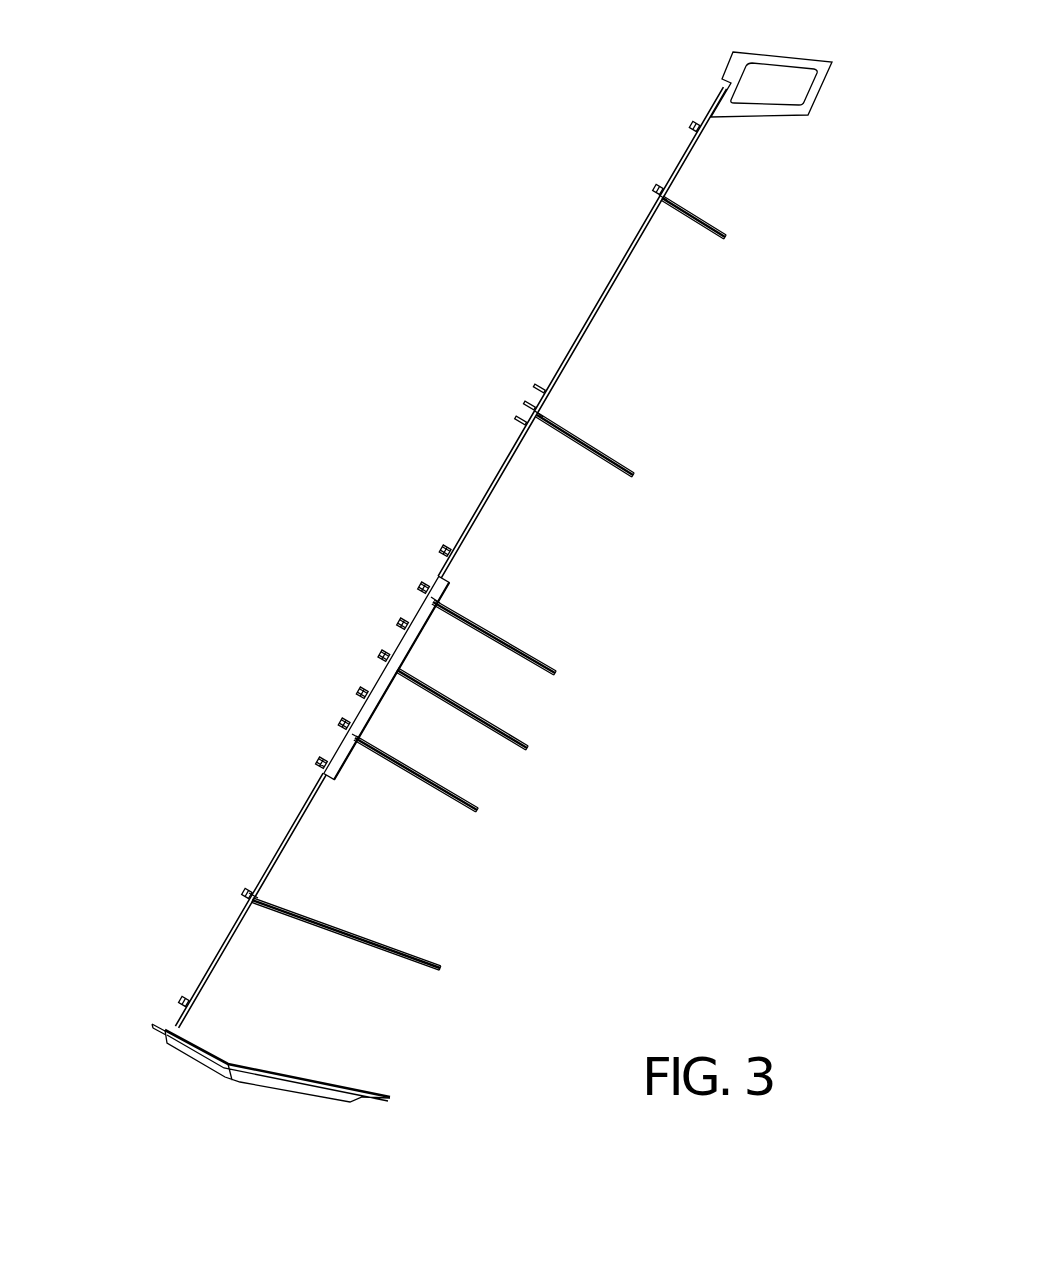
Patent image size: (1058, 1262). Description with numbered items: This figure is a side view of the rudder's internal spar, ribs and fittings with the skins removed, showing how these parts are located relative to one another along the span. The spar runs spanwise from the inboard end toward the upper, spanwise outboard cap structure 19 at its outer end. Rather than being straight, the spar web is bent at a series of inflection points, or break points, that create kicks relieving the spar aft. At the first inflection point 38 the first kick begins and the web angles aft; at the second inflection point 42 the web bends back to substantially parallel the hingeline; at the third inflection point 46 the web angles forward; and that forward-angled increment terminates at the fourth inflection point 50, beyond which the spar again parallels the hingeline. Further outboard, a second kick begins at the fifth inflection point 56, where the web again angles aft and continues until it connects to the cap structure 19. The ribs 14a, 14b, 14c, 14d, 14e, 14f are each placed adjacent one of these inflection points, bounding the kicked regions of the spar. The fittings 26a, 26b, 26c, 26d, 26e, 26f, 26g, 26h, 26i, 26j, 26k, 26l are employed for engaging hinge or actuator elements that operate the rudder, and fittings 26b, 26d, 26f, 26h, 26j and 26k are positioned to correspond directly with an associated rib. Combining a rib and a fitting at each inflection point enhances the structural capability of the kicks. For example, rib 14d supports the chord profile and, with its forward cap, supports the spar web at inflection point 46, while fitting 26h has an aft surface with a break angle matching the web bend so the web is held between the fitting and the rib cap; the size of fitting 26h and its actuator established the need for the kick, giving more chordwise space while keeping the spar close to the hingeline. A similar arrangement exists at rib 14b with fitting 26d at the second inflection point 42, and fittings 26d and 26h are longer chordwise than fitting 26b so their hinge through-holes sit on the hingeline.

The cap structure 19 is at (755, 75).
The rib 14a is at (377, 943).
The rib 14b is at (430, 770).
The rib 14c is at (453, 695).
The rib 14d is at (483, 628).
The rib 14e is at (587, 438).
The rib 14f is at (702, 213).
The fitting 26a is at (177, 1007).
The fitting 26b is at (245, 897).
The fitting 26c is at (320, 765).
The fitting 26d is at (337, 727).
The fitting 26e is at (357, 695).
The fitting 26f is at (375, 658).
The fitting 26g is at (395, 627).
The fitting 26h is at (414, 590).
The fitting 26i is at (440, 553).
The fitting 26j is at (525, 410).
The fitting 26k is at (653, 193).
The fitting 26l is at (693, 128).
The first inflection point 38 is at (257, 897).
The second inflection point 42 is at (358, 736).
The third inflection point 46 is at (440, 598).
The fourth inflection point 50 is at (542, 410).
The fifth inflection point 56 is at (662, 208).